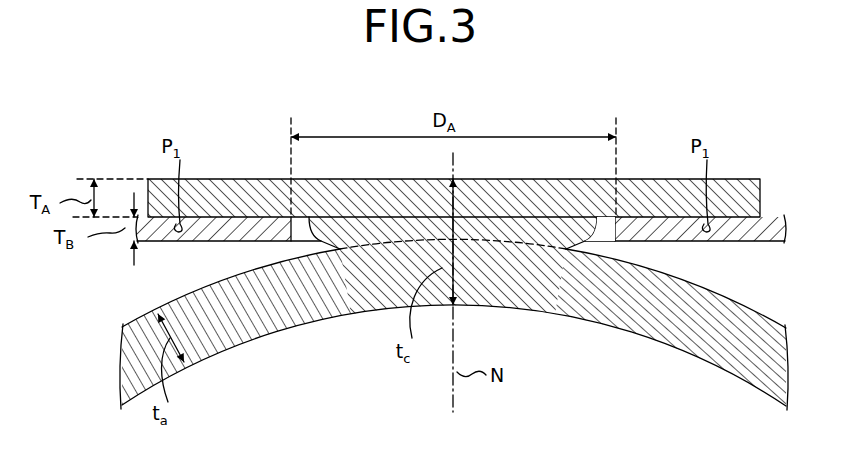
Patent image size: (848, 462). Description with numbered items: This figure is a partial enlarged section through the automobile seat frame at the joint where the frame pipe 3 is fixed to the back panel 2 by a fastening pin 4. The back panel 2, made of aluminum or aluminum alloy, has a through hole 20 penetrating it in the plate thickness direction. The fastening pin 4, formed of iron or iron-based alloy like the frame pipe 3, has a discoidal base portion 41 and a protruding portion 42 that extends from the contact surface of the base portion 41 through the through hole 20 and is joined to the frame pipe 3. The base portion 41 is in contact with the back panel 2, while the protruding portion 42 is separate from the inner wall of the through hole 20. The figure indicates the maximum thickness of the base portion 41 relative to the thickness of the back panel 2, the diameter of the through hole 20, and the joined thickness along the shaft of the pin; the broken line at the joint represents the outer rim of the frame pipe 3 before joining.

The back panel 2 is at (770, 225).
The frame pipe 3 is at (245, 327).
The fastening pin 4 is at (454, 247).
The through hole 20 is at (612, 220).
The base portion 41 is at (245, 200).
The protruding portion 42 is at (579, 248).